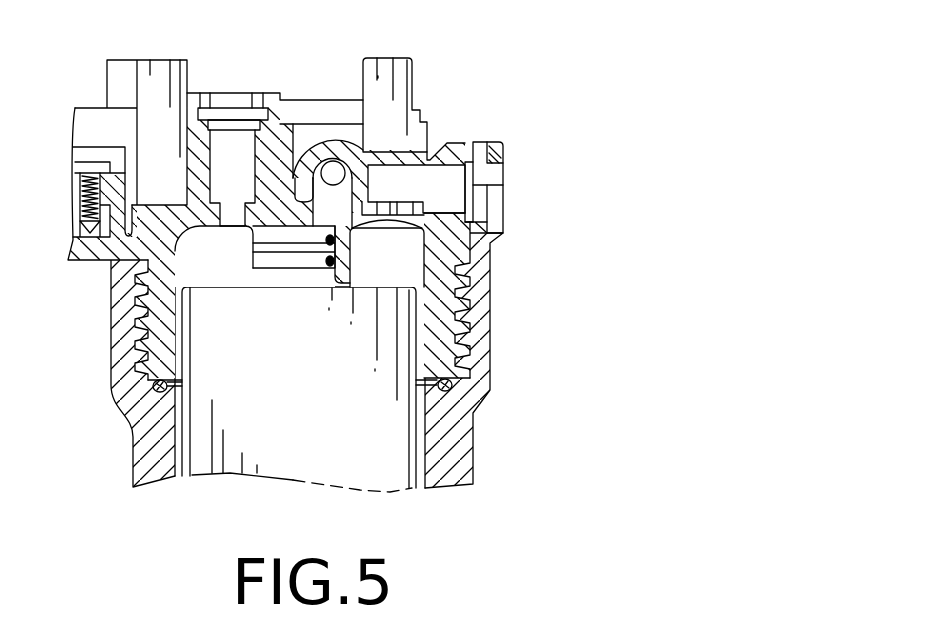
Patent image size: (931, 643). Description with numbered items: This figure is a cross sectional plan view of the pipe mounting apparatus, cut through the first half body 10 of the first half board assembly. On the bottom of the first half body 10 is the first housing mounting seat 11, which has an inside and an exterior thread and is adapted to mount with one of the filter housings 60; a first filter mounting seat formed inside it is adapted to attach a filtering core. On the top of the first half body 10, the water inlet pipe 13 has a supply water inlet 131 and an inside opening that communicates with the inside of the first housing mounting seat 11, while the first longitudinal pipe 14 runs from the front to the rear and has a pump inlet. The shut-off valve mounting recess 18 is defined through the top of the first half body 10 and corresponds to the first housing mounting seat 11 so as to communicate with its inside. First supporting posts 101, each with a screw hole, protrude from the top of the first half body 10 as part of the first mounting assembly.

The first half body 10 is at (483, 243).
The first housing mounting seat 11 is at (468, 327).
The water inlet pipe 13 is at (433, 157).
The supply water inlet 131 is at (500, 188).
The first longitudinal pipe 14 is at (350, 143).
The shut-off valve mounting recess 18 is at (266, 98).
The filter housing 60 is at (463, 432).
The first supporting post 101 is at (408, 78).